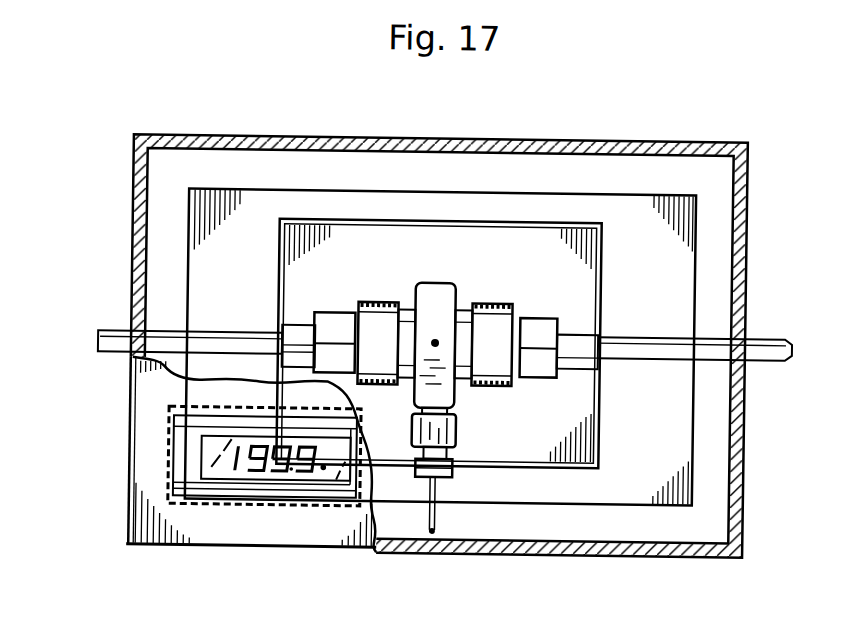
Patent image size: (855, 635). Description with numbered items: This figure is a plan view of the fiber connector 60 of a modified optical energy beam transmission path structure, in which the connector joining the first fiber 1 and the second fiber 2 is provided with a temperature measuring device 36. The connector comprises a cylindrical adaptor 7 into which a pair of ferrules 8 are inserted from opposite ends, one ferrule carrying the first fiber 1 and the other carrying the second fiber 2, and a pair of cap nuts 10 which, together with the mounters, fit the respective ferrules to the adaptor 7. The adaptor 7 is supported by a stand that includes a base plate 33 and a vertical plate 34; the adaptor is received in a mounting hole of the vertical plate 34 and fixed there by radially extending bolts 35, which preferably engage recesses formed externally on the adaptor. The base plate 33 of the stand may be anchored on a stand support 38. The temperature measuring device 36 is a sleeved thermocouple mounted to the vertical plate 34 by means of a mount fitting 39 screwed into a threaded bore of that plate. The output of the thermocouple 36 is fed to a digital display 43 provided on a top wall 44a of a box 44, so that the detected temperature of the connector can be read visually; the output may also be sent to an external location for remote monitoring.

The first fiber 1 is at (660, 343).
The second fiber 2 is at (209, 337).
The cylindrical adaptor 7 is at (462, 380).
The ferrule 8 is at (299, 326).
The cap nut 10 is at (372, 304).
The base plate 33 is at (526, 449).
The vertical plate 34 is at (444, 292).
The bolt 35 is at (435, 339).
The temperature measuring device 36 is at (412, 437).
The stand support 38 is at (628, 484).
The mount fitting 39 is at (457, 445).
The digital display 43 is at (200, 468).
The box 44 is at (121, 435).
The top wall 44a is at (253, 535).
The fiber connector 60 is at (318, 280).